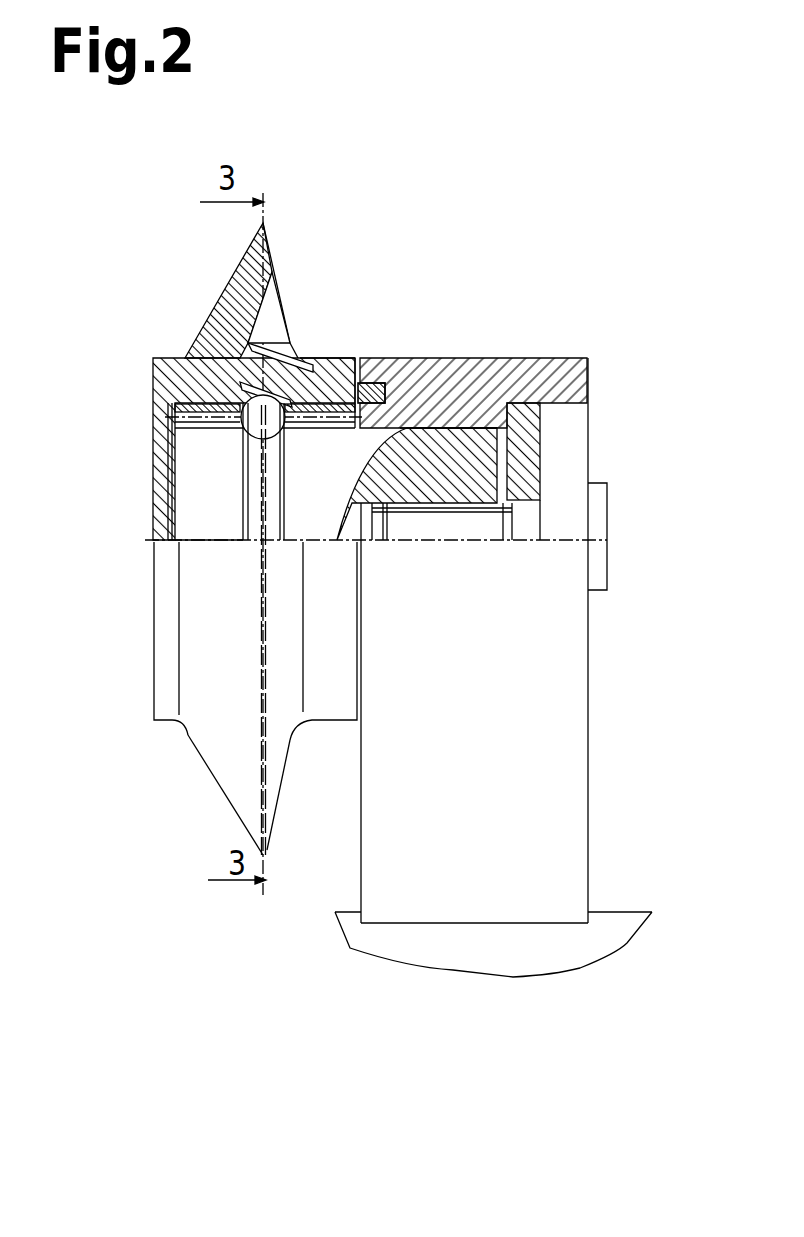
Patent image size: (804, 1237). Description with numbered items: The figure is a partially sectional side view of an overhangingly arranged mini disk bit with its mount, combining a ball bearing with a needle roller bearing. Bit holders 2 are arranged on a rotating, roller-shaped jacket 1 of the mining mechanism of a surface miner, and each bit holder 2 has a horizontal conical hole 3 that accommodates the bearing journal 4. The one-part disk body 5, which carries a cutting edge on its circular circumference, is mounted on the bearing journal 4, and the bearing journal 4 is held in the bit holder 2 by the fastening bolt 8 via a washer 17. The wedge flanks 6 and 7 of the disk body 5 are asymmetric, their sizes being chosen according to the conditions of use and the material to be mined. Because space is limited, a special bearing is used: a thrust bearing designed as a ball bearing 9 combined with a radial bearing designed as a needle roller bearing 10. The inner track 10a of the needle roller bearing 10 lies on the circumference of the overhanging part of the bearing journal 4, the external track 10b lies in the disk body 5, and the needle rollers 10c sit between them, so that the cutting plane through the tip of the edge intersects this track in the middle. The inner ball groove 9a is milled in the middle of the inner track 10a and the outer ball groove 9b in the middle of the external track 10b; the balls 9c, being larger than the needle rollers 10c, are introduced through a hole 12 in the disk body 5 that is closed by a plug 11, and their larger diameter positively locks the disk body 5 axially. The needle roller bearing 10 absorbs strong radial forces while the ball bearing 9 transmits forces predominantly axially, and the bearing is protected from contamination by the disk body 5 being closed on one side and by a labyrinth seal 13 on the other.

The jacket 1 is at (387, 948).
The bit holder 2 is at (587, 368).
The horizontal conical hole 3 is at (498, 370).
The bearing journal 4 is at (225, 515).
The disk body 5 is at (237, 600).
The wedge flank 6 is at (235, 813).
The wedge flank 7 is at (275, 817).
The fastening bolt 8 is at (557, 527).
The ball bearing 9 is at (208, 327).
The inner ball groove 9a is at (237, 497).
The outer ball groove 9b is at (310, 358).
The balls 9c is at (237, 442).
The needle roller bearing 10 is at (180, 360).
The inner track 10a is at (203, 428).
The external track 10b is at (155, 393).
The needle rollers 10c is at (155, 418).
The plug 11 is at (305, 368).
The hole 12 is at (288, 337).
The labyrinth seal 13 is at (383, 382).
The washer 17 is at (530, 455).